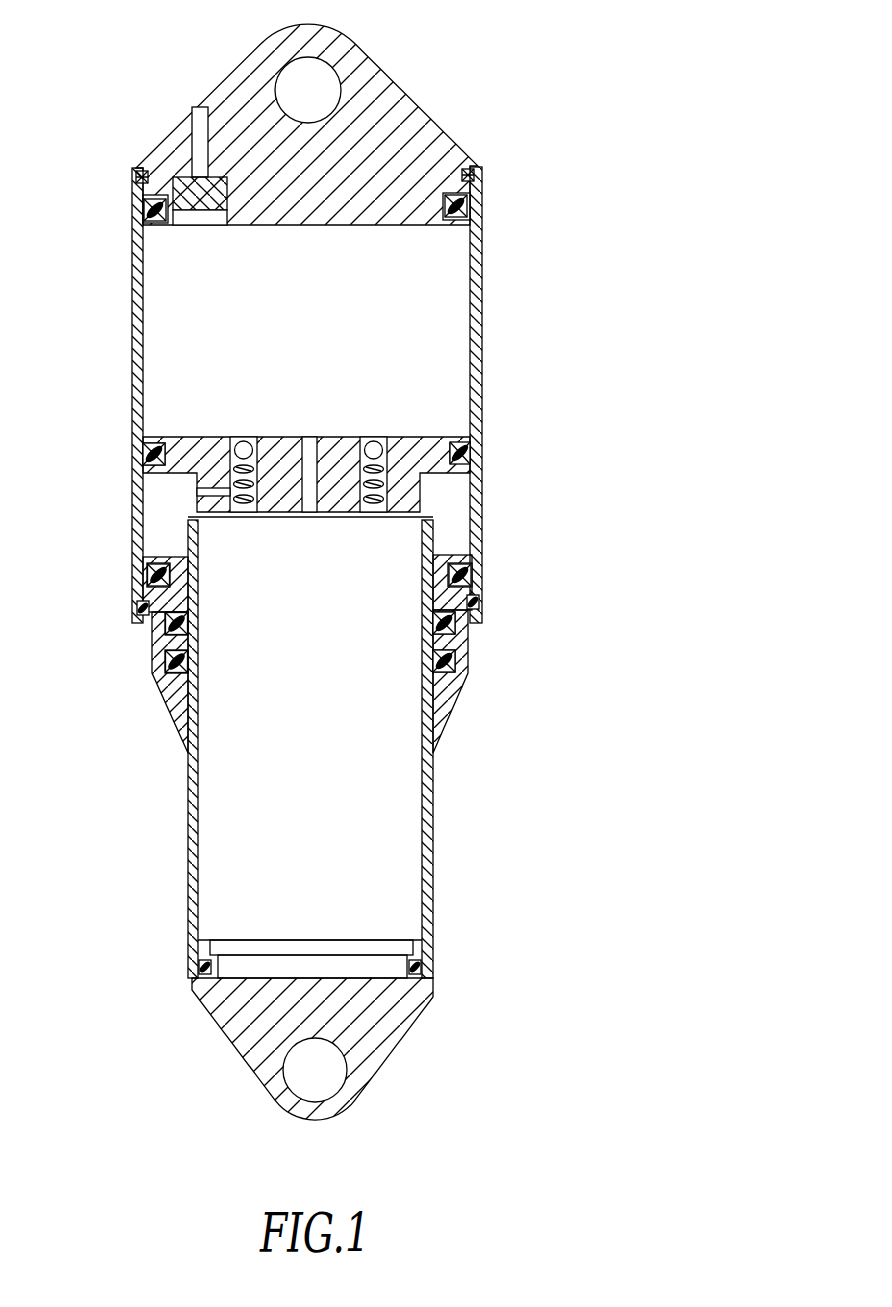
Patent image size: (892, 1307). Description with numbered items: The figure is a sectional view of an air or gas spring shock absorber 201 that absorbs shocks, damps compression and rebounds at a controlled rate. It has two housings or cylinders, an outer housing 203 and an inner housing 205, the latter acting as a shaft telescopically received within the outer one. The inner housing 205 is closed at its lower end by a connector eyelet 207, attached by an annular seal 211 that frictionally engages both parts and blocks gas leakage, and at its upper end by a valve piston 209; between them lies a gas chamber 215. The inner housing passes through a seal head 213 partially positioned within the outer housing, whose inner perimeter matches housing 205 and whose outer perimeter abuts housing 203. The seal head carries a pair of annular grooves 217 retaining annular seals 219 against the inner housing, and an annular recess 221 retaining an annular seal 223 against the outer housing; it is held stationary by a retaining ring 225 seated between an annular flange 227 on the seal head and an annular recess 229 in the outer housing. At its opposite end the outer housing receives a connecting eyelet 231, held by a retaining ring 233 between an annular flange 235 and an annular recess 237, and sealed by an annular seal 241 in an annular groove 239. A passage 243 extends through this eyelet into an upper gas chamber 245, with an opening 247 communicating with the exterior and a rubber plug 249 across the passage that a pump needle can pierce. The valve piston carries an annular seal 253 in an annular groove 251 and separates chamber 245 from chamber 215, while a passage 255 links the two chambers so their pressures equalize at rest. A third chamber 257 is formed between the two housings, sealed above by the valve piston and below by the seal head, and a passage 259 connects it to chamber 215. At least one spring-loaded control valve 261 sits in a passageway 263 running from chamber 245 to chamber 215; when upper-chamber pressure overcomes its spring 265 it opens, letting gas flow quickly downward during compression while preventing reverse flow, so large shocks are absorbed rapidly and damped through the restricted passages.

The shock absorber 201 is at (333, 560).
The housing 203 is at (483, 382).
The housing 205 is at (433, 885).
The connector eyelet 207 is at (378, 1045).
The valve piston 209 is at (312, 496).
The annular seal 211 is at (422, 968).
The seal head 213 is at (452, 706).
The chamber 215 is at (333, 720).
The annular grooves 217 is at (190, 662).
The annular seals 219 is at (437, 660).
The annular recess 221 is at (155, 565).
The annular seal 223 is at (150, 586).
The retaining ring 225 is at (480, 600).
The annular flange 227 is at (143, 615).
The annular recess 229 is at (150, 628).
The connecting eyelet 231 is at (331, 54).
The retaining ring 233 is at (478, 178).
The annular flange 235 is at (160, 175).
The annular recess 237 is at (137, 177).
The annular groove 239 is at (148, 210).
The annular seal 241 is at (140, 243).
The passage 243 is at (197, 226).
The chamber 245 is at (328, 350).
The opening 247 is at (204, 108).
The plug 249 is at (217, 212).
The annular groove 251 is at (470, 441).
The annular seal 253 is at (470, 466).
The passage 255 is at (310, 513).
The third chamber 257 is at (456, 519).
The passage 259 is at (200, 493).
The control valve 261 is at (308, 472).
The passageway 263 is at (377, 513).
The spring 265 is at (240, 513).